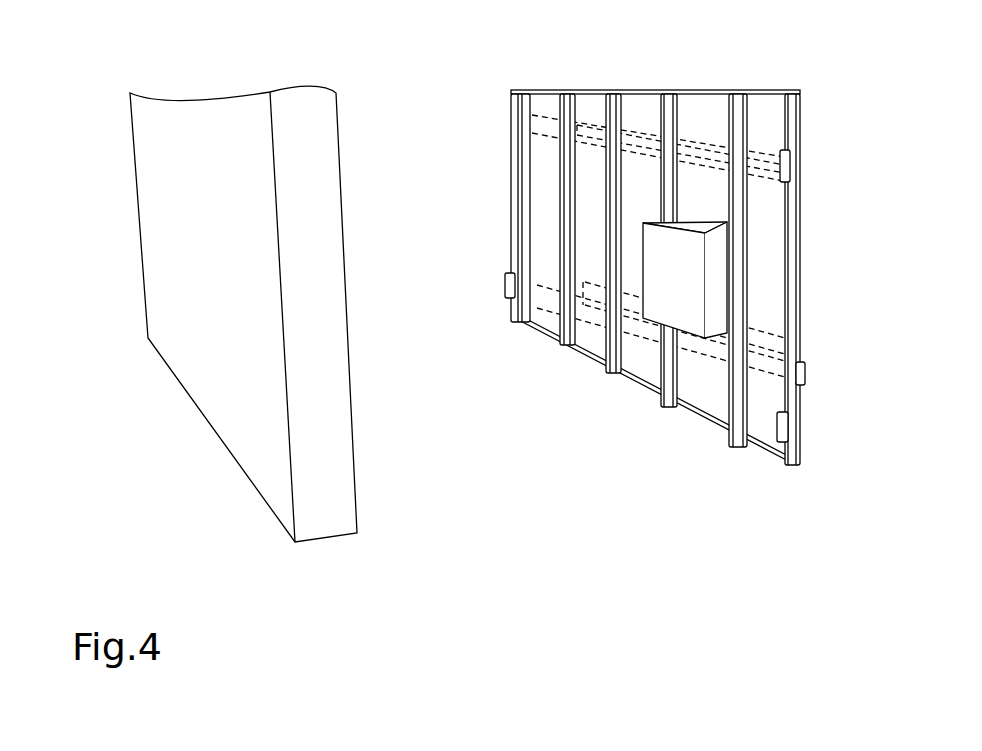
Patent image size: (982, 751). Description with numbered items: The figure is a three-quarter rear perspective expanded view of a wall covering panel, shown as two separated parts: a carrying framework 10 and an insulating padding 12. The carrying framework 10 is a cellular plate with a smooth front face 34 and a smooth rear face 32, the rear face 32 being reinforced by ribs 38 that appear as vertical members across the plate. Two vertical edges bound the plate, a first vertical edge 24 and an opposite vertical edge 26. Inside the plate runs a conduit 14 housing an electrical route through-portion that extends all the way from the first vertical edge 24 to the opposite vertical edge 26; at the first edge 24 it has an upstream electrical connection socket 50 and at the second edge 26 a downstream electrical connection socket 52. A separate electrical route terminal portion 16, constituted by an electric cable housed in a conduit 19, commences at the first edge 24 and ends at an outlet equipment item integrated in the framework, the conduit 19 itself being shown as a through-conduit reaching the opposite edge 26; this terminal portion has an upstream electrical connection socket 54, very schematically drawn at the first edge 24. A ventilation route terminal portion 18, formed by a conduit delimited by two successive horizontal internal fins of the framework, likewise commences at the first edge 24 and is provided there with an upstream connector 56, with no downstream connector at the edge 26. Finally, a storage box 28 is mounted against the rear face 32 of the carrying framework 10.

The carrying framework 10 is at (653, 261).
The insulating padding 12 is at (178, 212).
The conduit of electrical route through-portion 14 is at (653, 269).
The electrical route terminal portion 16 is at (763, 166).
The ventilation route terminal portion 18 is at (767, 342).
The conduit 19 is at (698, 127).
The first vertical edge 24 is at (812, 284).
The opposite vertical edge 26 is at (510, 200).
The storage box 28 is at (688, 240).
The rear face 32 is at (590, 107).
The front face 34 is at (803, 428).
The ribs 38 is at (517, 128).
The upstream electrical connection socket 50 is at (790, 436).
The downstream electrical connection socket 52 is at (505, 275).
The upstream electrical connection socket 54 is at (790, 163).
The upstream connector 56 is at (804, 372).